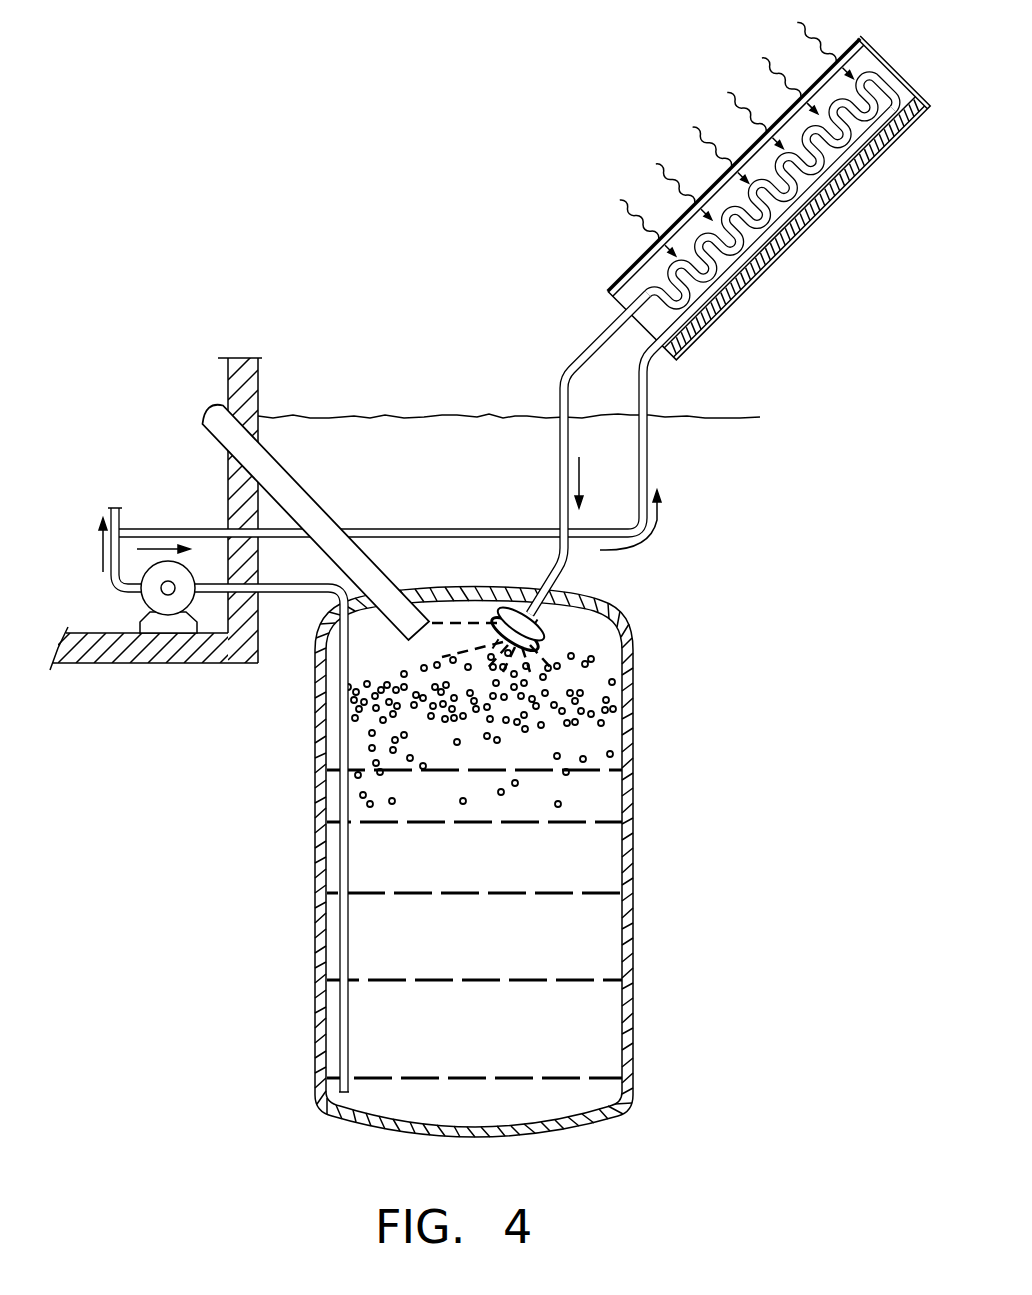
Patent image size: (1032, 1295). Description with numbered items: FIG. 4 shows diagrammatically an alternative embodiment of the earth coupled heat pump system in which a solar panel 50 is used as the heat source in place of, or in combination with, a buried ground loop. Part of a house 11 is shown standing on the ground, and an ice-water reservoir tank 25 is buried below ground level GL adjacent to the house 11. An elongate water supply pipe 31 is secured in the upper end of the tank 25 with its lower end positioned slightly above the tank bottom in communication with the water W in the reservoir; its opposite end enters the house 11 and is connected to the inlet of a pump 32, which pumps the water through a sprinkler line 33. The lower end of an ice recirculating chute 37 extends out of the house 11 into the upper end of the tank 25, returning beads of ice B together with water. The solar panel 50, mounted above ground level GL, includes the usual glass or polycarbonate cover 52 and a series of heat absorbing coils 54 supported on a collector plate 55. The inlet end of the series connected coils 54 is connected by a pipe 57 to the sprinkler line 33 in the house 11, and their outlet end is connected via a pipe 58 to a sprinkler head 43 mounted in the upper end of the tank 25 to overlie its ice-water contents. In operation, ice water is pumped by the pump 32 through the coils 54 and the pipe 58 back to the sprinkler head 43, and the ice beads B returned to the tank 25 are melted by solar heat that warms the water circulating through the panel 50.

The house 11 is at (257, 393).
The tank 25 is at (317, 948).
The water supply pipe 31 is at (337, 660).
The pump 32 is at (143, 597).
The sprinkler line 33 is at (111, 512).
The ice recirculating chute 37 is at (314, 499).
The sprinkler head 43 is at (548, 631).
The solar panel 50 is at (709, 180).
The cover 52 is at (736, 167).
The heat absorbing coils 54 is at (794, 227).
The collector plate 55 is at (768, 198).
The pipe 57 is at (648, 463).
The pipe 58 is at (560, 474).
The ground level GL is at (408, 412).
The beads of ice B is at (412, 649).
The water W is at (530, 899).